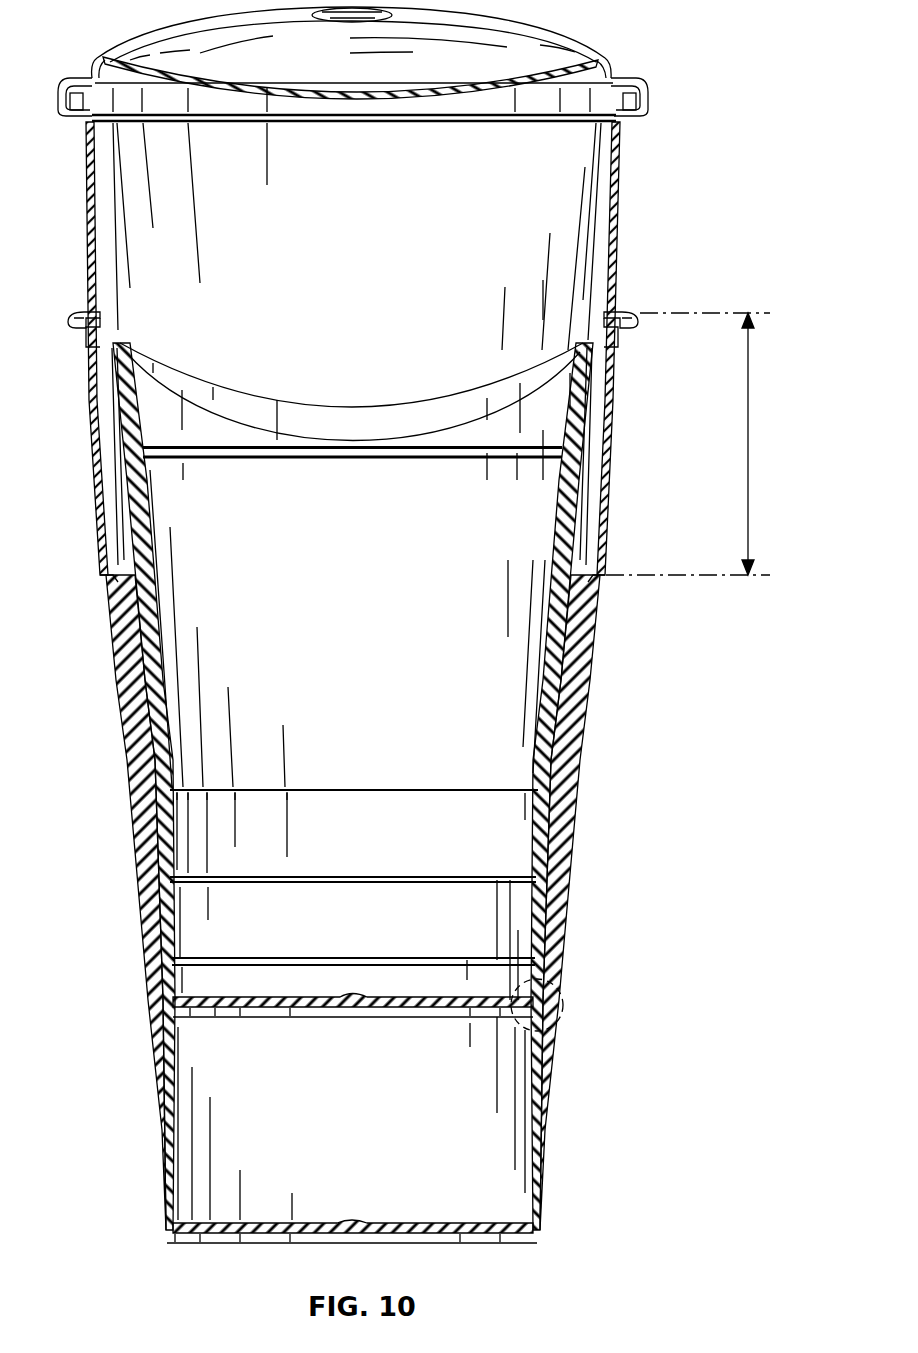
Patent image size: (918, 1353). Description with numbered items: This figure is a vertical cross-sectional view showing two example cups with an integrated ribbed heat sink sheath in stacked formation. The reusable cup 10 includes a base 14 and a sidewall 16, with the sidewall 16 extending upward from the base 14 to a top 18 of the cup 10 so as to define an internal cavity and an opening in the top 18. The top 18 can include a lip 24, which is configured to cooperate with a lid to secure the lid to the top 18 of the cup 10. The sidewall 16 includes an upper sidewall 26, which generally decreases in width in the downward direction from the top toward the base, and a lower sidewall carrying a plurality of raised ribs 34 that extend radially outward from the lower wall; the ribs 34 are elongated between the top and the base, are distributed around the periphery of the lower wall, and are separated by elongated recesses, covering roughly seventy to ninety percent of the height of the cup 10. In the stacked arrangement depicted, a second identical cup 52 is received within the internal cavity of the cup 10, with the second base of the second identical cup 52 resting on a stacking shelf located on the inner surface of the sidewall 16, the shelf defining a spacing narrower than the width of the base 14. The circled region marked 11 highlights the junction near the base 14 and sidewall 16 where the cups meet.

The cup 10 is at (638, 310).
The base joint detail 11 is at (563, 1003).
The base 14 is at (538, 1232).
The sidewall 16 is at (102, 555).
The top 18 is at (77, 312).
The lip 24 is at (633, 330).
The upper sidewall 26 is at (748, 450).
The raised ribs 34 is at (124, 470).
The second identical cup 52 is at (613, 190).